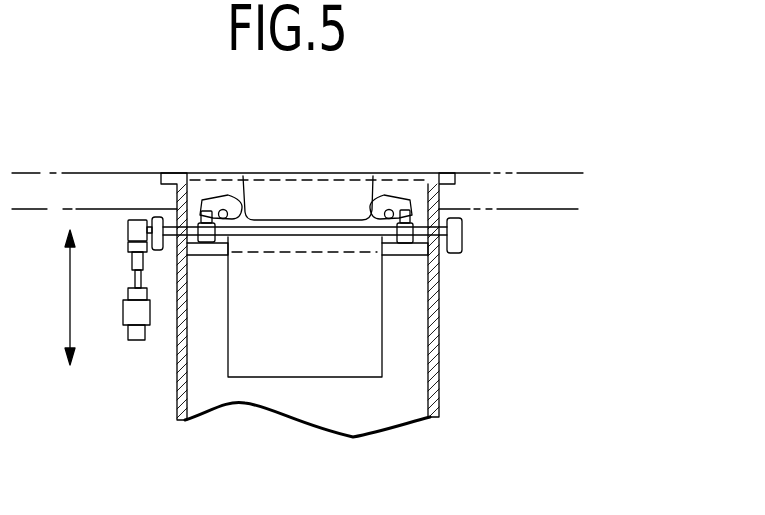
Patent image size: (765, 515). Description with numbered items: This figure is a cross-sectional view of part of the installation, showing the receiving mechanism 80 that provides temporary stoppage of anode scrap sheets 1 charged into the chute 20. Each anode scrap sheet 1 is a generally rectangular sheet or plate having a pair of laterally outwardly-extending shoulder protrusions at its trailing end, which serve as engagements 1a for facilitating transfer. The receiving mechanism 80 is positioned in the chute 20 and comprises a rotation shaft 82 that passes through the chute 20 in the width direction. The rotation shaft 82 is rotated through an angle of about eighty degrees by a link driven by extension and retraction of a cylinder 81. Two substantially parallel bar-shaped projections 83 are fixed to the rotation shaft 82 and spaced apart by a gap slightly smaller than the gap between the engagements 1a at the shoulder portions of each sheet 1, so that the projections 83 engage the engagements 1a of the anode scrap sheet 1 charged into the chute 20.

The anode scrap sheet 1 is at (382, 348).
The engagement 1a is at (245, 200).
The chute 20 is at (440, 313).
The receiving mechanism 80 is at (505, 243).
The cylinder 81 is at (128, 318).
The rotation shaft 82 is at (155, 216).
The bar-shaped projection 83 is at (210, 211).